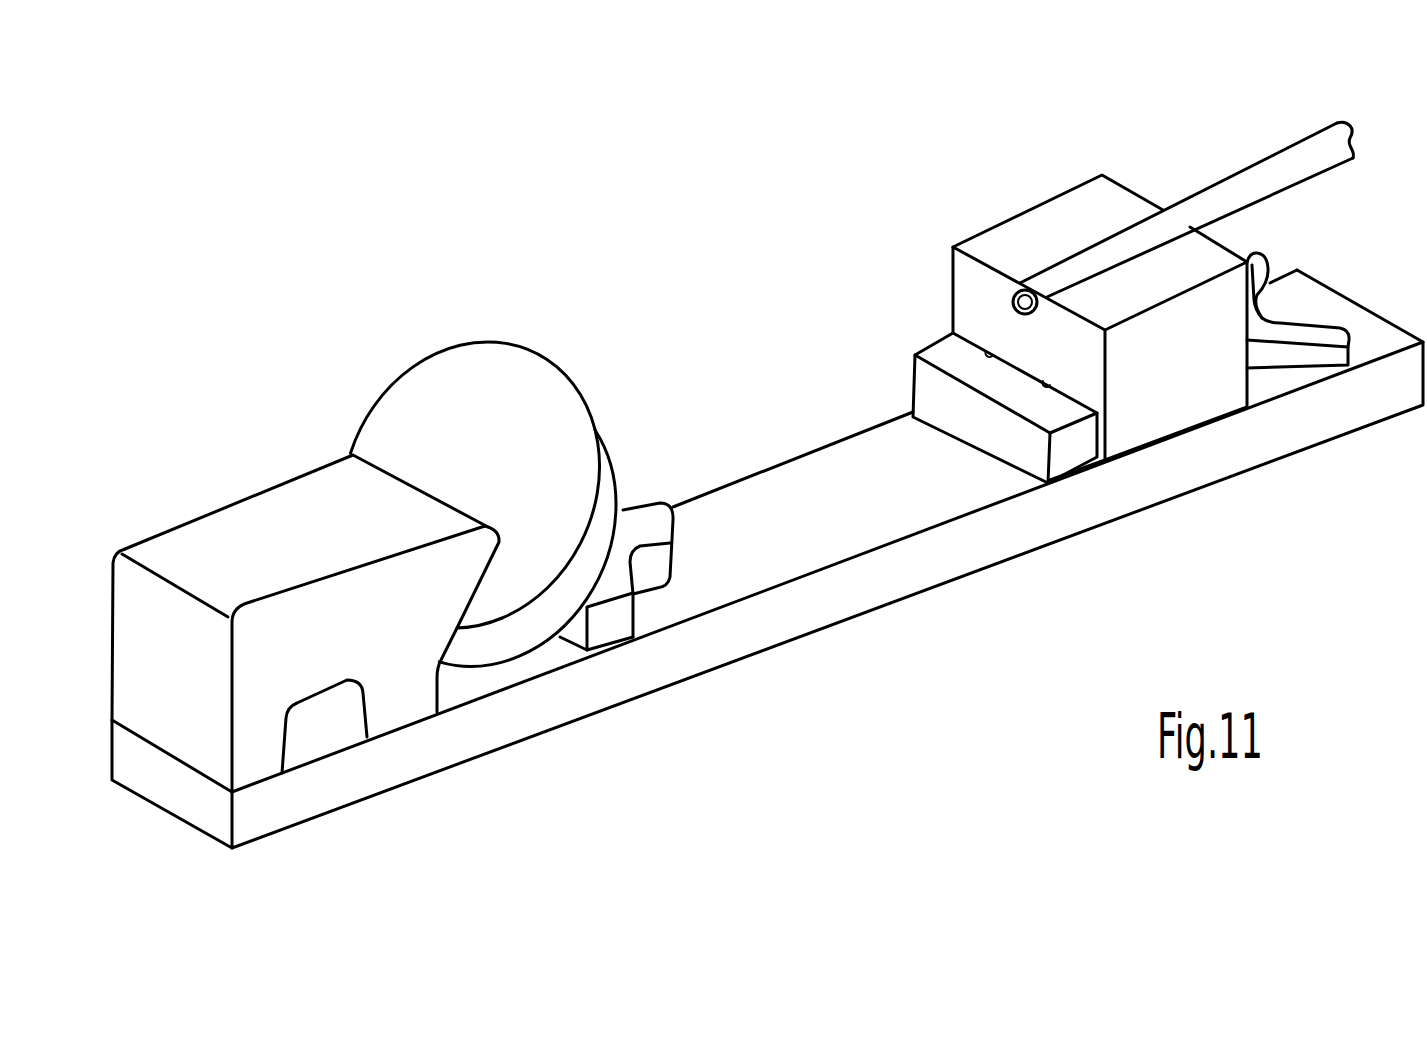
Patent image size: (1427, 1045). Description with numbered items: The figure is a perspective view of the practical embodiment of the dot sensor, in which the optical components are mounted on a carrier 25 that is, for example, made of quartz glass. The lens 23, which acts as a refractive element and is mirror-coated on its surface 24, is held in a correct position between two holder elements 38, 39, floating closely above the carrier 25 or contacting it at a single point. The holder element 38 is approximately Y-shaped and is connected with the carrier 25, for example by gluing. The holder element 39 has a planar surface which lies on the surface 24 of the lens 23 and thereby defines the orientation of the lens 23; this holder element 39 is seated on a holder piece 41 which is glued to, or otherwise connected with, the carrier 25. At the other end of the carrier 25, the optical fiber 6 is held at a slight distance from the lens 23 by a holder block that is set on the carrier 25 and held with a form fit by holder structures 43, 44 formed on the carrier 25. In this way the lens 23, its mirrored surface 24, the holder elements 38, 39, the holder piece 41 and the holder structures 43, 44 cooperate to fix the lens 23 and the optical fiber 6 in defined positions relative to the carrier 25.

The optical fiber 6 is at (1283, 160).
The lens 23 is at (612, 467).
The surface 24 is at (501, 459).
The carrier 25 is at (1160, 487).
The holder element 38 is at (650, 517).
The holder element 39 is at (215, 523).
The holder piece 41 is at (342, 733).
The holder structure 43 is at (1000, 392).
The holder structure 44 is at (1313, 337).